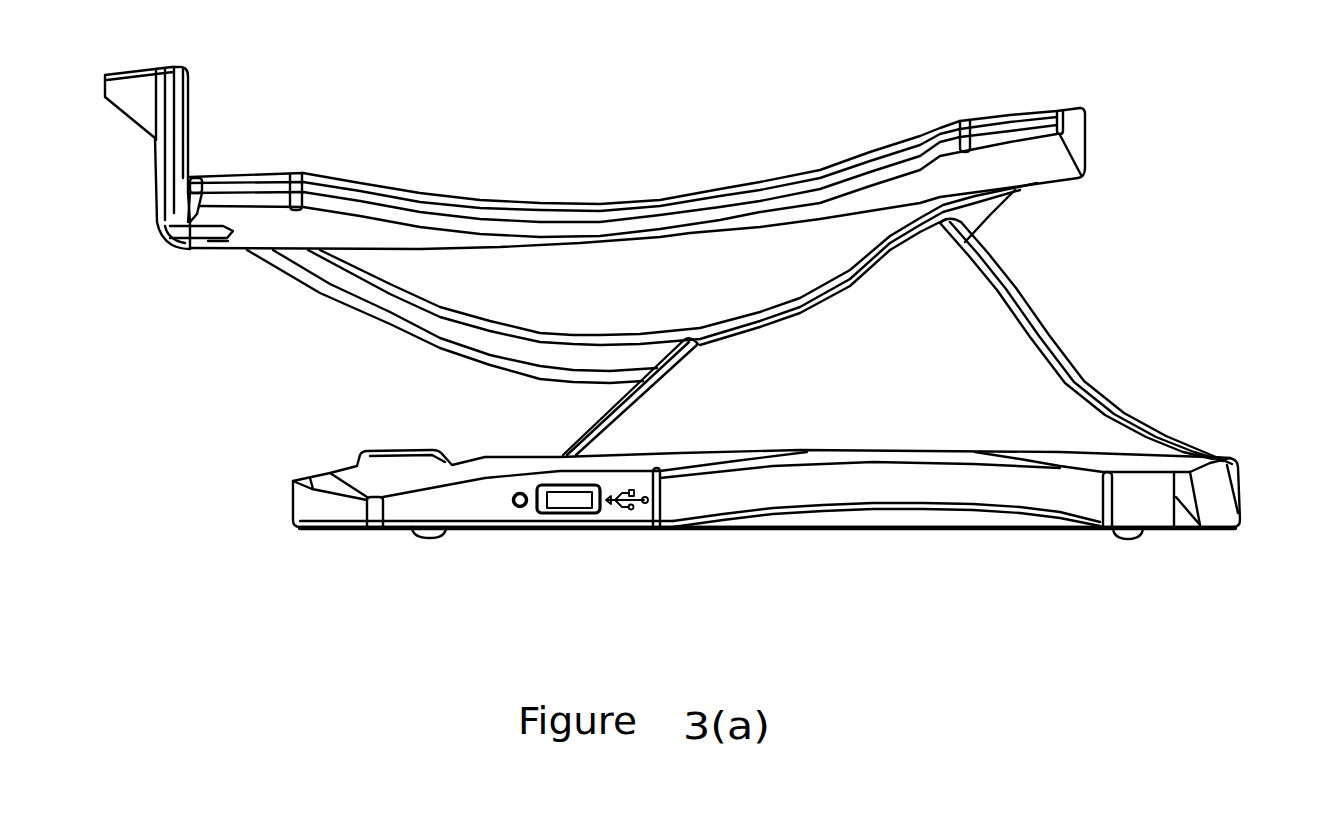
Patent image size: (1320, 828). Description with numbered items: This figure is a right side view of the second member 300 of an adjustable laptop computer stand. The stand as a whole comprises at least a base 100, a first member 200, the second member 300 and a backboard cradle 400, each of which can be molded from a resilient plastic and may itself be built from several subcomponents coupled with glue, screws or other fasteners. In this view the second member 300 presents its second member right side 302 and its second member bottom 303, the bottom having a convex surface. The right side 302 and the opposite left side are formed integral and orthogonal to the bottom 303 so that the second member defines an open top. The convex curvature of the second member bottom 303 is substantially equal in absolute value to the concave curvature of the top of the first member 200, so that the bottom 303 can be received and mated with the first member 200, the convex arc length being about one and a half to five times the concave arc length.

The base 100 is at (1190, 500).
The first member 200 is at (1060, 395).
The second member 300 is at (1023, 223).
The second member right side 302 is at (655, 305).
The second member bottom 303 is at (382, 337).
The backboard cradle 400 is at (903, 147).